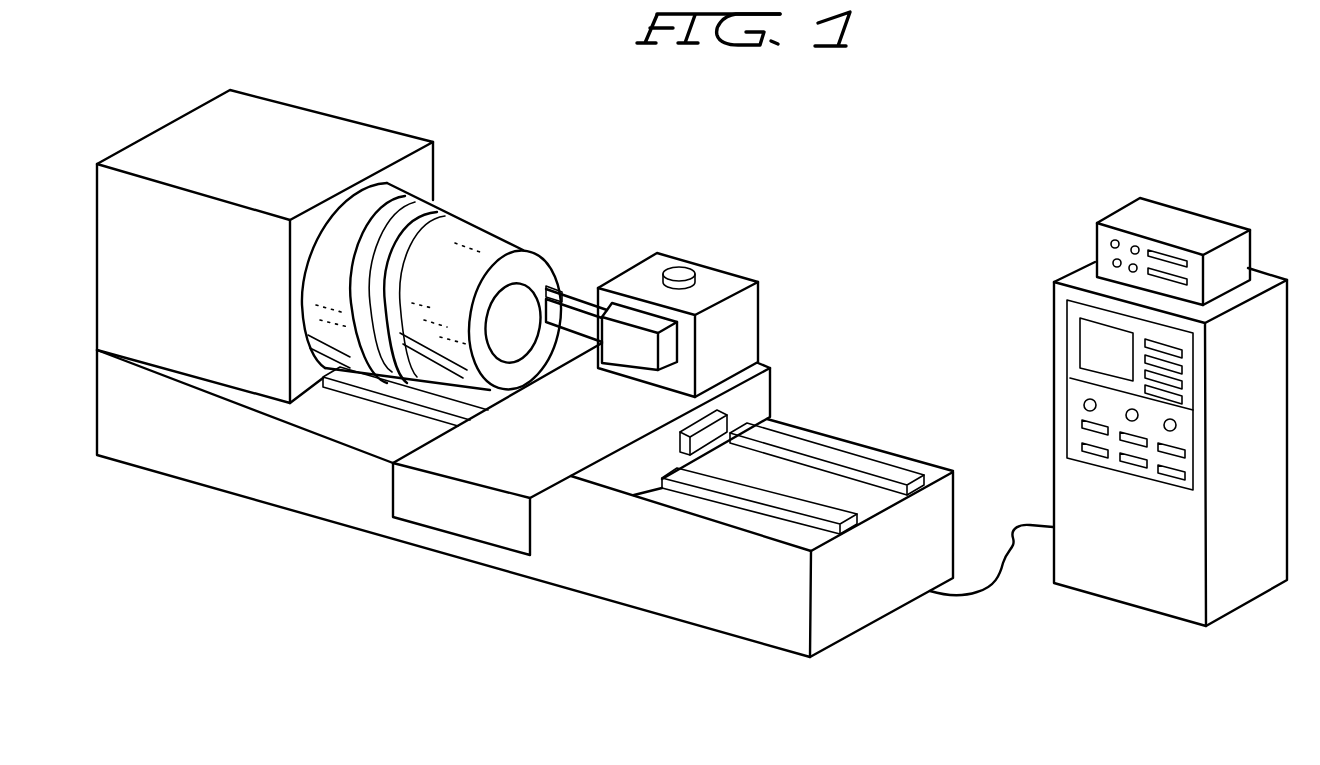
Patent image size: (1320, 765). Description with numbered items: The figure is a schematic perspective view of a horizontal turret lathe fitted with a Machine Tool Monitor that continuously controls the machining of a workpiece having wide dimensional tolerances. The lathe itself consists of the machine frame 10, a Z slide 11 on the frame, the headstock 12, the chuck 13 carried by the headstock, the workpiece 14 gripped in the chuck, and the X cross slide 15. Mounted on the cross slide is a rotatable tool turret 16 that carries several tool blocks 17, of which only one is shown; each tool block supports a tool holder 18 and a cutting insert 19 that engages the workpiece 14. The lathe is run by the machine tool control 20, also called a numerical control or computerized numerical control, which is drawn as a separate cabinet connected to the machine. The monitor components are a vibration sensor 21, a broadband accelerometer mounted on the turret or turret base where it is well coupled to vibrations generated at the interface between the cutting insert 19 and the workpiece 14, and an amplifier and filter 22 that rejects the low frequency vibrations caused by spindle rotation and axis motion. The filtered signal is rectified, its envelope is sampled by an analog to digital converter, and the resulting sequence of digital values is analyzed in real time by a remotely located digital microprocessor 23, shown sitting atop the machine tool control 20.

The machine frame 10 is at (525, 503).
The Z slide 11 is at (579, 450).
The headstock 12 is at (265, 223).
The chuck 13 is at (412, 242).
The workpiece 14 is at (485, 286).
The X cross slide 15 is at (581, 452).
The rotatable tool turret 16 is at (678, 297).
The tool block 17 is at (636, 363).
The tool holder 18 is at (571, 356).
The cutting insert 19 is at (566, 247).
The machine tool control 20 is at (1108, 444).
The vibration sensor 21 is at (721, 257).
The amplifier and filter 22 is at (758, 409).
The digital microprocessor 23 is at (1176, 238).